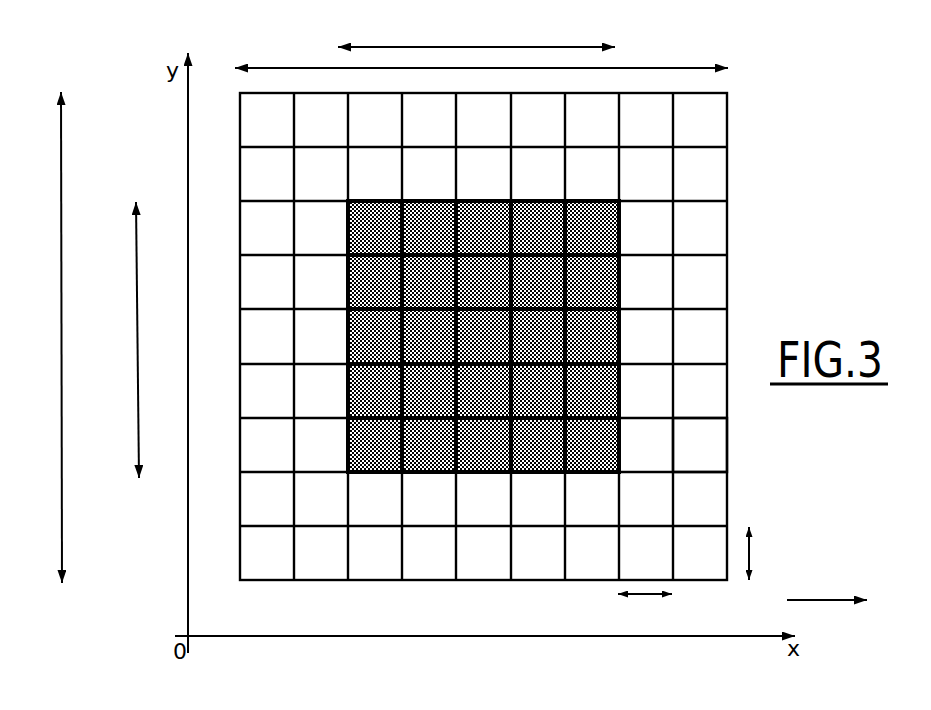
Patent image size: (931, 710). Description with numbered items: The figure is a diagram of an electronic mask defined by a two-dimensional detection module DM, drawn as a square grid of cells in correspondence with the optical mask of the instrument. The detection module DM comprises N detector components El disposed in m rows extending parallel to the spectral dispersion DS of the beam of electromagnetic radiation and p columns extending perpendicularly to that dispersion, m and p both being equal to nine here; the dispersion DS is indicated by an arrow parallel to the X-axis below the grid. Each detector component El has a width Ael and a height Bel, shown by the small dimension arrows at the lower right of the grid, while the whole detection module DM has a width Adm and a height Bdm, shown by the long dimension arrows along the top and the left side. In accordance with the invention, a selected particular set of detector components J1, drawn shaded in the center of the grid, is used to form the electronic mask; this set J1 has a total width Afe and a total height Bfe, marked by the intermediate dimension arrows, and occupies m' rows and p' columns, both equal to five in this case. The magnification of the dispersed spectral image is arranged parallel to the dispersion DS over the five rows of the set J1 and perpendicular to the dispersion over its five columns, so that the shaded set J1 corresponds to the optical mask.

The two-dimensional detection module DM is at (725, 232).
The particular set of detector components J1 is at (619, 342).
The detector component El is at (717, 438).
The total width of the particular set of detector components Afe is at (485, 46).
The width of the detection module Adm is at (631, 67).
The height of the detection module Bdm is at (62, 374).
The total height of the particular set of detector components Bfe is at (139, 374).
The width of a detector component Ael is at (645, 610).
The height of a detector component Bel is at (772, 553).
The spectral dispersion DS is at (827, 614).